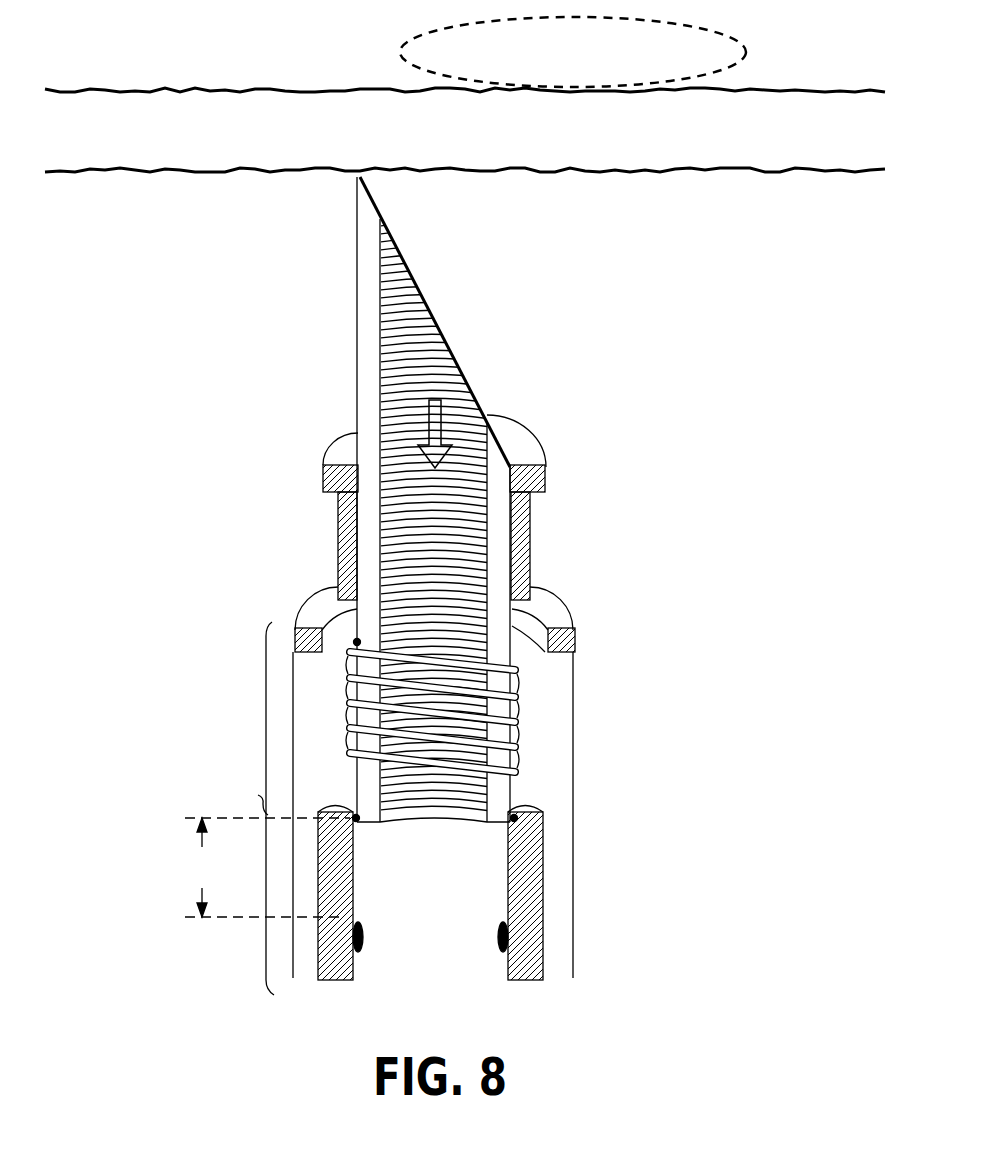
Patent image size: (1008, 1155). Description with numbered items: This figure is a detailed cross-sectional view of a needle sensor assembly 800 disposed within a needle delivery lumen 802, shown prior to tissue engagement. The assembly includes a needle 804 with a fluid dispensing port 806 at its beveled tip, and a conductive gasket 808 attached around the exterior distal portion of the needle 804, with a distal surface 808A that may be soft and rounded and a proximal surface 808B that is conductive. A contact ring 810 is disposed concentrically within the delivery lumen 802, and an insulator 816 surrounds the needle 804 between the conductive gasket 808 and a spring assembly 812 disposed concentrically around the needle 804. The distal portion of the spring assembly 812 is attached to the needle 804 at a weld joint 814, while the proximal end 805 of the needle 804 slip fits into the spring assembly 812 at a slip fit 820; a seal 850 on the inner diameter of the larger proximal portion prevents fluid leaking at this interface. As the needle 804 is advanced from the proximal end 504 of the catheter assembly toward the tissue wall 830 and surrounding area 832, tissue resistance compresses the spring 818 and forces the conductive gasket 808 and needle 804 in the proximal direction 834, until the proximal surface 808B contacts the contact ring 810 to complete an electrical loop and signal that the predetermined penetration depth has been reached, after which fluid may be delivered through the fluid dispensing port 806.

The needle sensor assembly 800 is at (745, 470).
The needle delivery lumen 802 is at (575, 755).
The needle 804 is at (368, 333).
The proximal end of the needle 805 is at (498, 823).
The fluid dispensing port 806 is at (460, 357).
The conductive gasket 808 is at (413, 470).
The distal surface of the conductive gasket 808A is at (345, 438).
The proximal surface of the conductive gasket 808B is at (325, 505).
The contact ring 810 is at (555, 618).
The spring assembly 812 is at (267, 808).
The weld joint 814 is at (357, 642).
The insulator 816 is at (523, 551).
The spring 818 is at (517, 700).
The slip fit 820 is at (520, 818).
The tissue wall 830 is at (731, 164).
The surrounding area 832 is at (667, 81).
The proximal direction 834 is at (488, 417).
The seal 850 is at (360, 950).
The proximal end of the catheter assembly 504 is at (630, 975).